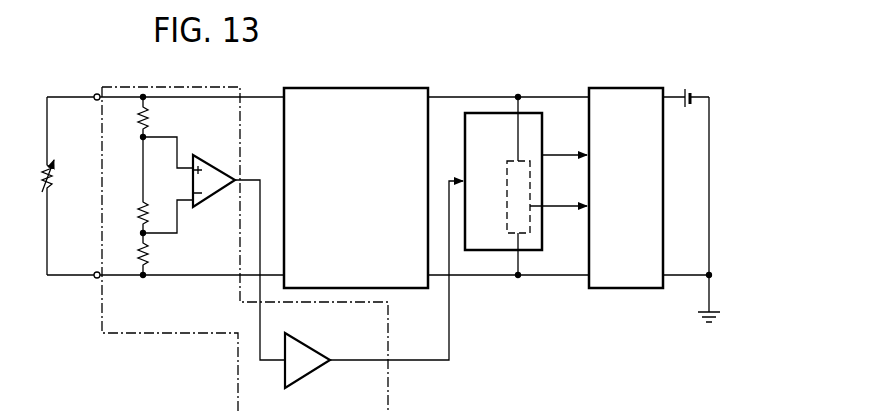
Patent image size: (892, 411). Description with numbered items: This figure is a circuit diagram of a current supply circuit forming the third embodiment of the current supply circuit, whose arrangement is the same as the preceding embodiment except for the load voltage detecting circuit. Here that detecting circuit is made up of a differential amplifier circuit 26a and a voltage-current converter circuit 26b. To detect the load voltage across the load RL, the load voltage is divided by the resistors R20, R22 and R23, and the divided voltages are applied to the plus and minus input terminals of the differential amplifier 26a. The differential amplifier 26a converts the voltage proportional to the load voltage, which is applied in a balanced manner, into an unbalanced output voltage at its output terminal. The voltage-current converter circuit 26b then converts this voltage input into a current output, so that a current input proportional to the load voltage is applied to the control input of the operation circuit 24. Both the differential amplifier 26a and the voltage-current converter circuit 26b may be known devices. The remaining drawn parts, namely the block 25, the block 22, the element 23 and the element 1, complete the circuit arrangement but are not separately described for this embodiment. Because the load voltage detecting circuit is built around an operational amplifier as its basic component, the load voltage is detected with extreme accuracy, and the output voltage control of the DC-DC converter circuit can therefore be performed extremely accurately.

The battery / DC power source 1 is at (687, 84).
The electronic flash unit terminals block 22 is at (605, 88).
The switching element 23 is at (507, 201).
The operation circuit 24 is at (487, 113).
The DC power feed circuit 25 is at (343, 88).
The differential amplifier circuit 26a is at (208, 205).
The voltage-current converter circuit 26b is at (312, 372).
The resistor R20 is at (135, 117).
The resistor R22 is at (139, 212).
The resistor R23 is at (148, 255).
The load resistor (variable) RL is at (60, 186).